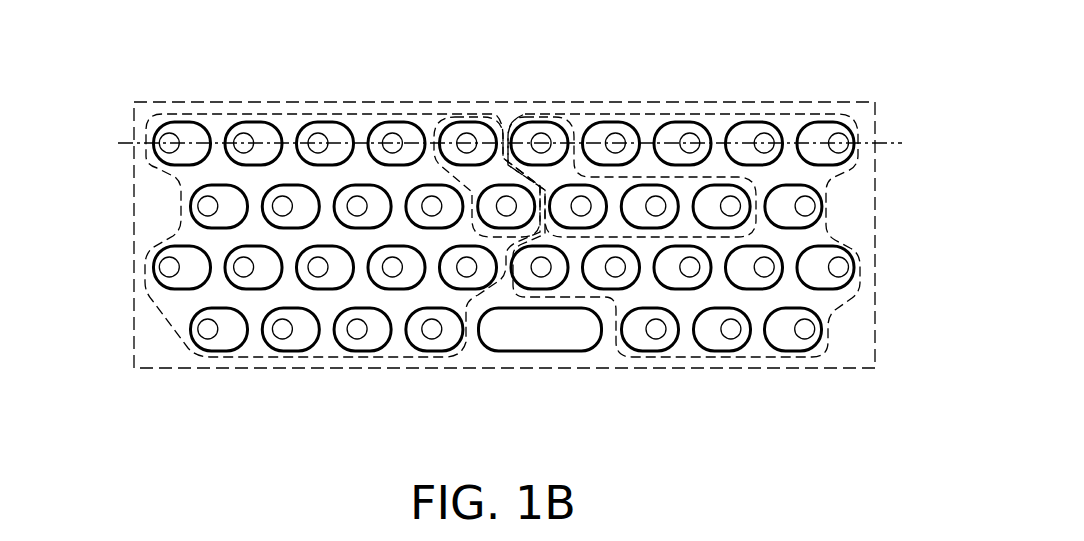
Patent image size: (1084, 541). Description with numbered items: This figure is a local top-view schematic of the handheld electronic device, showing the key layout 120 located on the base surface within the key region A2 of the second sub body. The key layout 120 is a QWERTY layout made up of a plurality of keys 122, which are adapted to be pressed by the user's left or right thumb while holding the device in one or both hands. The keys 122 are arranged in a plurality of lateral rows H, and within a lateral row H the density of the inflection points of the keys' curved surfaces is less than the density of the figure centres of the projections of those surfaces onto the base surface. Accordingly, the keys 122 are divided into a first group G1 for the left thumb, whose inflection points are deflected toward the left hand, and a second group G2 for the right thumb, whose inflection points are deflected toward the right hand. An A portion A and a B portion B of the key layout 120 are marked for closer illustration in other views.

The key layout 120 is at (143, 126).
The keys 122 is at (397, 121).
The A portion A is at (447, 113).
The B portion B is at (650, 177).
The lateral row H is at (893, 140).
The key region A2 is at (225, 369).
The first group G1 is at (375, 358).
The second group G2 is at (762, 358).